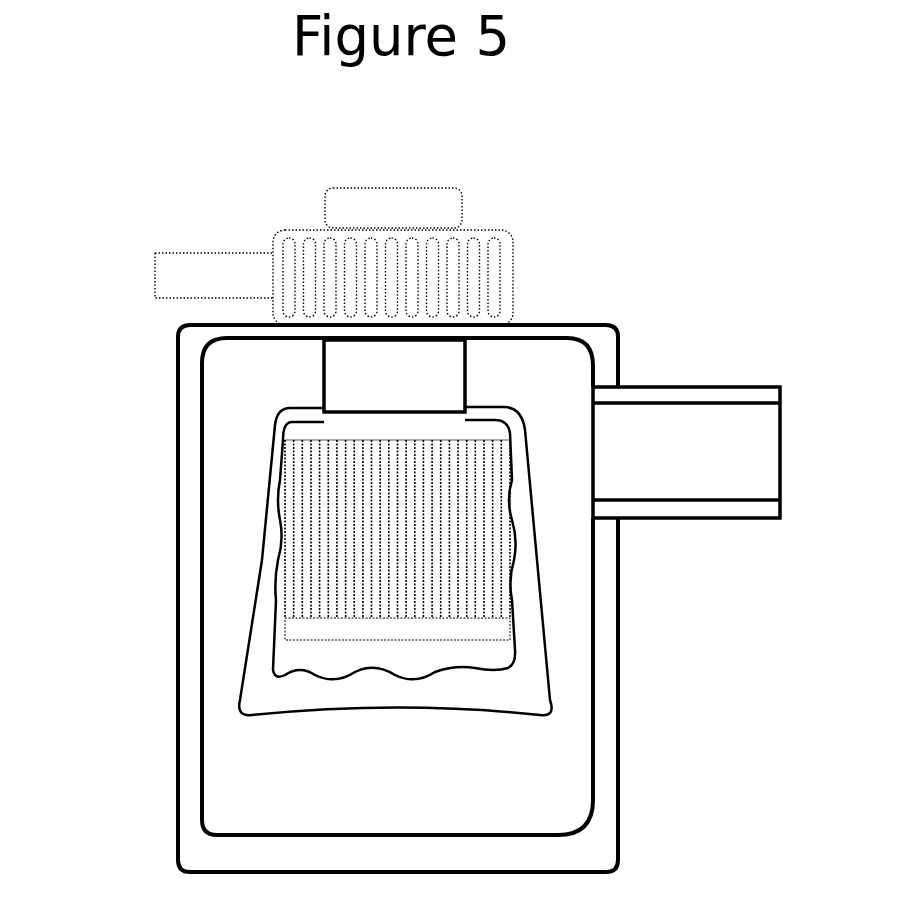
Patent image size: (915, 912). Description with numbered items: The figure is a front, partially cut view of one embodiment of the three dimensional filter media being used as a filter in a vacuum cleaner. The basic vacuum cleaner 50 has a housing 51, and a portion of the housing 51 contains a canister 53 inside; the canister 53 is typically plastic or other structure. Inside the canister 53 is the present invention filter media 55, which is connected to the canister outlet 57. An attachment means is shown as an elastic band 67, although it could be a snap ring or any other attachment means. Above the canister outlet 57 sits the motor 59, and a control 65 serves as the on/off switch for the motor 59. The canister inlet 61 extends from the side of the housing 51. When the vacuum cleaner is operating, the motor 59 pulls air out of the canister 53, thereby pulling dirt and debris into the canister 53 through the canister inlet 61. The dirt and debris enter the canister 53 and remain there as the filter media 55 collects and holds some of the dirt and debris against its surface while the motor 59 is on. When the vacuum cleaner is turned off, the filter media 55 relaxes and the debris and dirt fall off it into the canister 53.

The vacuum cleaner 50 is at (621, 385).
The housing 51 is at (620, 591).
The canister 53 is at (253, 619).
The filter media 55 is at (333, 532).
The canister outlet 57 is at (470, 383).
The motor 59 is at (523, 267).
The canister inlet 61 is at (742, 413).
The control 65 is at (478, 217).
The elastic band 67 is at (340, 418).